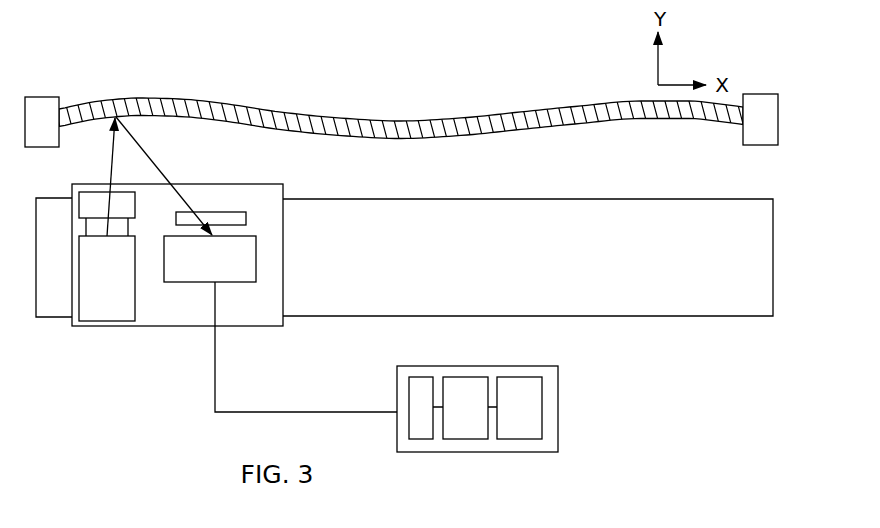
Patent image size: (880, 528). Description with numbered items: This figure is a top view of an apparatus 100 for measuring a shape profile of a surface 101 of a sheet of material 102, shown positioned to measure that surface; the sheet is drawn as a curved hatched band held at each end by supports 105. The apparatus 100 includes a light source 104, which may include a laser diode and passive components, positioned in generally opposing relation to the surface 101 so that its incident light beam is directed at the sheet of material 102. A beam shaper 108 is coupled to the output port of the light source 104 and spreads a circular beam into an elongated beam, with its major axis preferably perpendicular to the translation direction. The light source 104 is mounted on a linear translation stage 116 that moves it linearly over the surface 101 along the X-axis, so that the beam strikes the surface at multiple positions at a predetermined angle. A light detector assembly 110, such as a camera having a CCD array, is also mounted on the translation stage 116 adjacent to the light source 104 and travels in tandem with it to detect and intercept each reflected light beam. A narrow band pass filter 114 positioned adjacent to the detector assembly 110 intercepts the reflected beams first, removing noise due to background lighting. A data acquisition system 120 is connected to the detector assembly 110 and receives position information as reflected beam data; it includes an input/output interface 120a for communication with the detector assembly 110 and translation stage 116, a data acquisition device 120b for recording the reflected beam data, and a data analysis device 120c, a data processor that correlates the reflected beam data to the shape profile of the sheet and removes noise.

The apparatus 100 is at (159, 262).
The surface 101 is at (452, 138).
The sheet of material 102 is at (400, 99).
The light source 104 is at (106, 322).
The web support roller 105 is at (42, 96).
The beam shaper 108 is at (79, 201).
The light detector assembly 110 is at (257, 257).
The narrow band pass filter 114 is at (217, 212).
The linear translation stage 116 is at (581, 198).
The data acquisition system 120 is at (509, 437).
The input/output interface 120a is at (422, 428).
The data acquisition device 120b is at (466, 428).
The data analysis device 120c is at (528, 425).